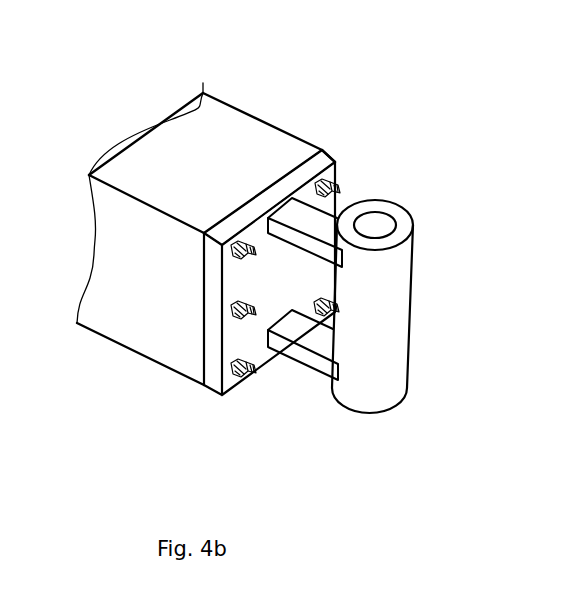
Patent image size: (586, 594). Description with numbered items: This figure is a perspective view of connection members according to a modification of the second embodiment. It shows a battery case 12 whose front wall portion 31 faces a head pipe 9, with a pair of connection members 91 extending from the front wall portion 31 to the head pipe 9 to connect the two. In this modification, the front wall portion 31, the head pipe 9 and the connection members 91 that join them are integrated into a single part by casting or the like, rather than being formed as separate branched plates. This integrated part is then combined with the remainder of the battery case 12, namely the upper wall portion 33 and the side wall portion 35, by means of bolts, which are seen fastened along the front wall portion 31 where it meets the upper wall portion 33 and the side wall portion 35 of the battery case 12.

The battery case 12 is at (223, 102).
The upper wall portion 33 is at (273, 142).
The front wall portion 31 is at (323, 155).
The side wall portion 35 is at (160, 327).
The connection members 91 is at (318, 222).
The head pipe 9 is at (402, 318).